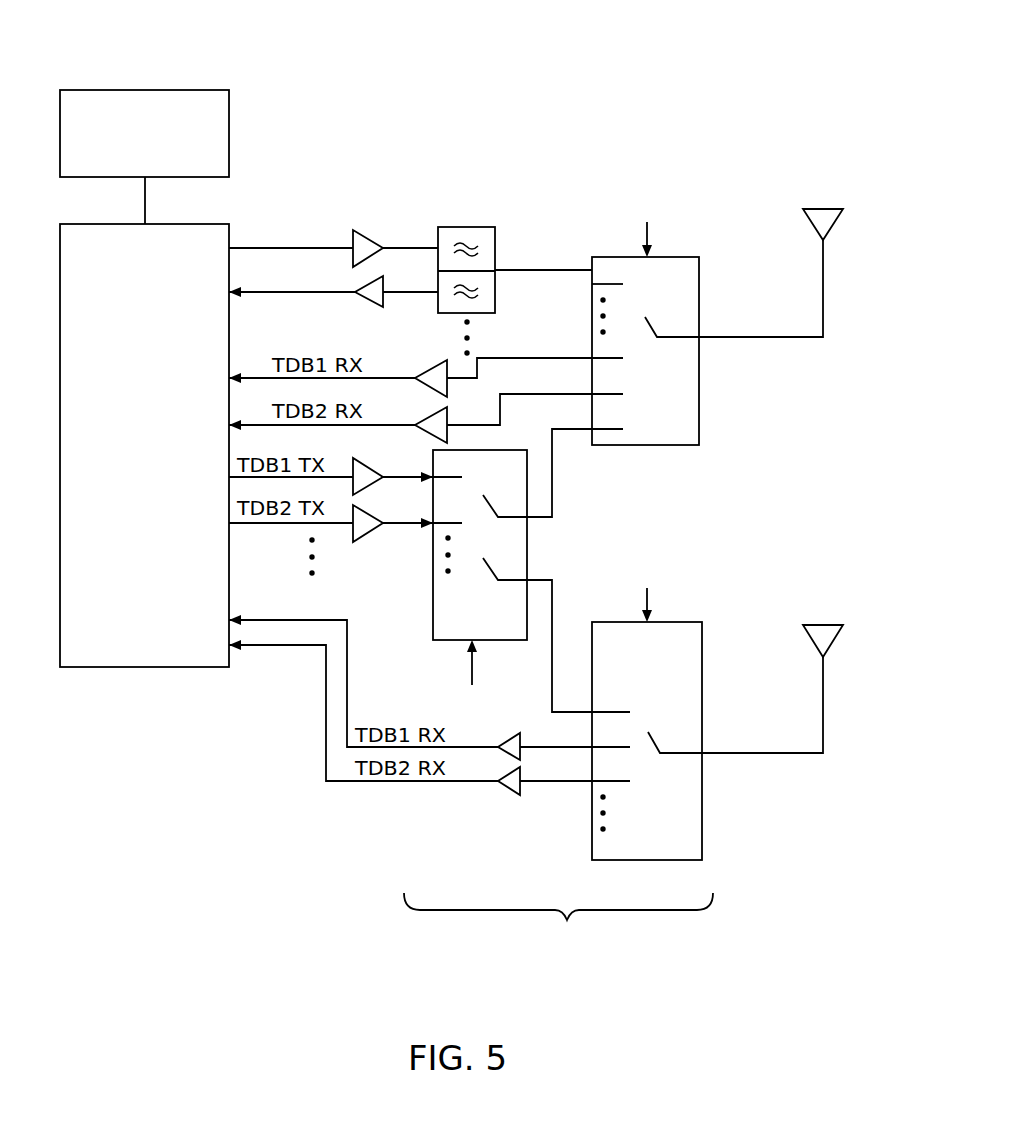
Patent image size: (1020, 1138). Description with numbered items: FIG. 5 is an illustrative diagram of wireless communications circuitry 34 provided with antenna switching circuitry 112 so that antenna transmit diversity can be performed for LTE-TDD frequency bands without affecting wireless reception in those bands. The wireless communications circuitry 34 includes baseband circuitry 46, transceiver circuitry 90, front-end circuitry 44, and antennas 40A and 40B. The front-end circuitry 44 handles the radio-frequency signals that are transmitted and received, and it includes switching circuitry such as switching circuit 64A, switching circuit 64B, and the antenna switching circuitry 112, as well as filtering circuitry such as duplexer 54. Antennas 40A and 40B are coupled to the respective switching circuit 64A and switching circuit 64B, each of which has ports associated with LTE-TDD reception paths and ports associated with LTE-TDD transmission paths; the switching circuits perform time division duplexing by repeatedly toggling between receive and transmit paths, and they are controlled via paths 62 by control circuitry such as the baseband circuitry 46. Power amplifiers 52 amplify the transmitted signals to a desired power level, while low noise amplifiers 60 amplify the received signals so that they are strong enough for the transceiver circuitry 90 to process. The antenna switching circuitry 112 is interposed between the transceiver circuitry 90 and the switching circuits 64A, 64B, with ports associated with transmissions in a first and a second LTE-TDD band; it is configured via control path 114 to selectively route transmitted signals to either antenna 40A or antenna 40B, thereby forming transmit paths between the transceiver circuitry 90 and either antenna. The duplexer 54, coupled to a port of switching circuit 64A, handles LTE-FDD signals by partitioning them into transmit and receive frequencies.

The wireless communications circuitry 34 is at (783, 51).
The baseband circuitry 46 is at (229, 137).
The transceiver circuitry 90 is at (145, 667).
The power amplifiers 52 is at (368, 230).
The low noise amplifiers 60 is at (372, 303).
The duplexer 54 is at (470, 227).
The antenna switching circuitry 112 is at (433, 630).
The control path 114 is at (472, 668).
The paths 62 is at (647, 230).
The switching circuit 64A is at (699, 410).
The switching circuit 64B is at (702, 818).
The antenna 40A is at (823, 209).
The antenna 40B is at (823, 625).
The front-end circuitry 44 is at (558, 921).